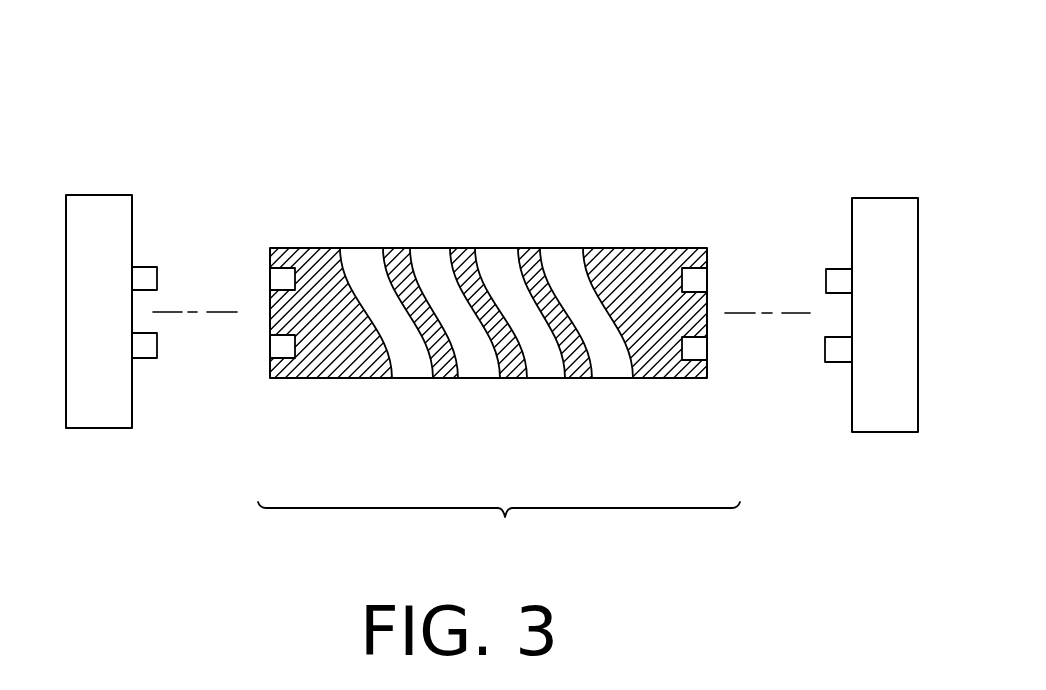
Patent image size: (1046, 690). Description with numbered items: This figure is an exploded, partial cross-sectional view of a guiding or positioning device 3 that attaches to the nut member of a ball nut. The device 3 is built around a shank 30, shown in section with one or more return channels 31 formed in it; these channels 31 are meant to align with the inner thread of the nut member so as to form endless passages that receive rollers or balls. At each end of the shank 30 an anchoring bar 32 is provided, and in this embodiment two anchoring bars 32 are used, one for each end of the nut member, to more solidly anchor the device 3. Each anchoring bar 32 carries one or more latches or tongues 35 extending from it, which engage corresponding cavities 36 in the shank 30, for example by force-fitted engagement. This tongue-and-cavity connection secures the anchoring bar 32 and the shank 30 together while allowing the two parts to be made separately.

The guiding or positioning device 3 is at (492, 262).
The shank 30 is at (492, 296).
The return channels 31 is at (555, 258).
The anchoring bar 32 is at (102, 202).
The latches or tongues 35 is at (153, 347).
The cavities 36 is at (277, 282).